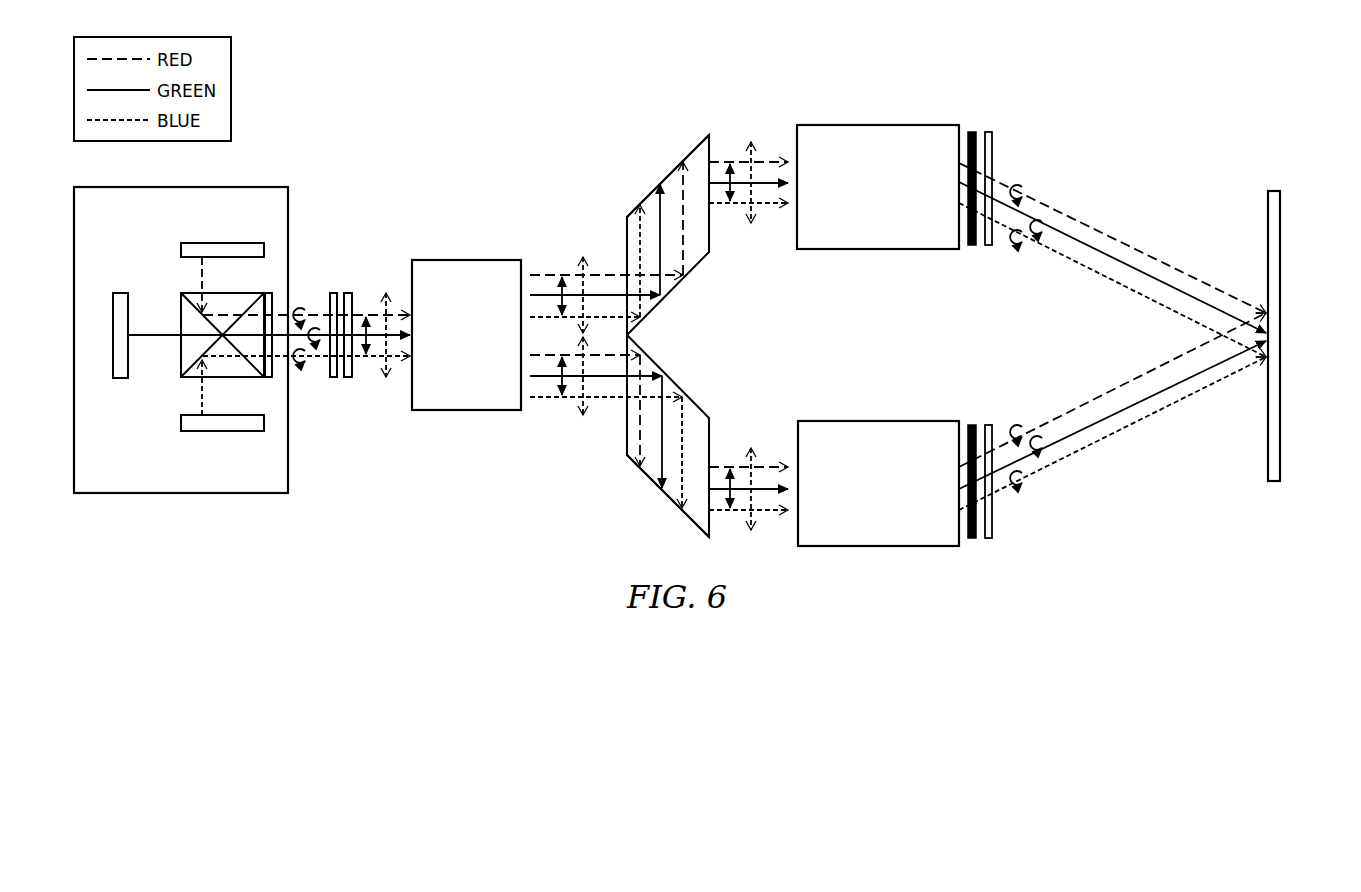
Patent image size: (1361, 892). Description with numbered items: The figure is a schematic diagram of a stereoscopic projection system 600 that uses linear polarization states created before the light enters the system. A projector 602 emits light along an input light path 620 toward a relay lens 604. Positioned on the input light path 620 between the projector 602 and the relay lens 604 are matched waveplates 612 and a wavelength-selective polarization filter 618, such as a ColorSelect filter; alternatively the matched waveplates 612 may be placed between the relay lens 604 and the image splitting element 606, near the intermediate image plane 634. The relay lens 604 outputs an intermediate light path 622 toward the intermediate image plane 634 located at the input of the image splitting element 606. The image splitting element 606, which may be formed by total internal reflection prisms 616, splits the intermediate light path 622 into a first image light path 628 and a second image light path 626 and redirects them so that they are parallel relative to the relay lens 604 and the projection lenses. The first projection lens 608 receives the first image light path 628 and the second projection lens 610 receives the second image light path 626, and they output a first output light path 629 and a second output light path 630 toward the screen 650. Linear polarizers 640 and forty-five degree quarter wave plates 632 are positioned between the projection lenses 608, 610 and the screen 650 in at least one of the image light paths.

The stereoscopic projection system 600 is at (296, 588).
The projector 602 is at (130, 494).
The relay lens 604 is at (485, 346).
The image splitting element 606 is at (678, 286).
The first projection lens 608 is at (897, 198).
The second projection lens 610 is at (897, 494).
The matched waveplates 612 is at (271, 293).
The total internal reflection prisms 616 is at (650, 197).
The wavelength-selective polarization filter 618 is at (348, 378).
The input light path 620 is at (368, 305).
The intermediate light path 622 is at (546, 273).
The second image light path 626 is at (712, 435).
The first image light path 628 is at (712, 233).
The first output light path 629 is at (1083, 222).
The second output light path 630 is at (1083, 450).
The 45° quarter wave plates 632 is at (993, 150).
The intermediate image plane 634 is at (627, 403).
The linear polarizers 640 is at (974, 249).
The screen 650 is at (1281, 233).